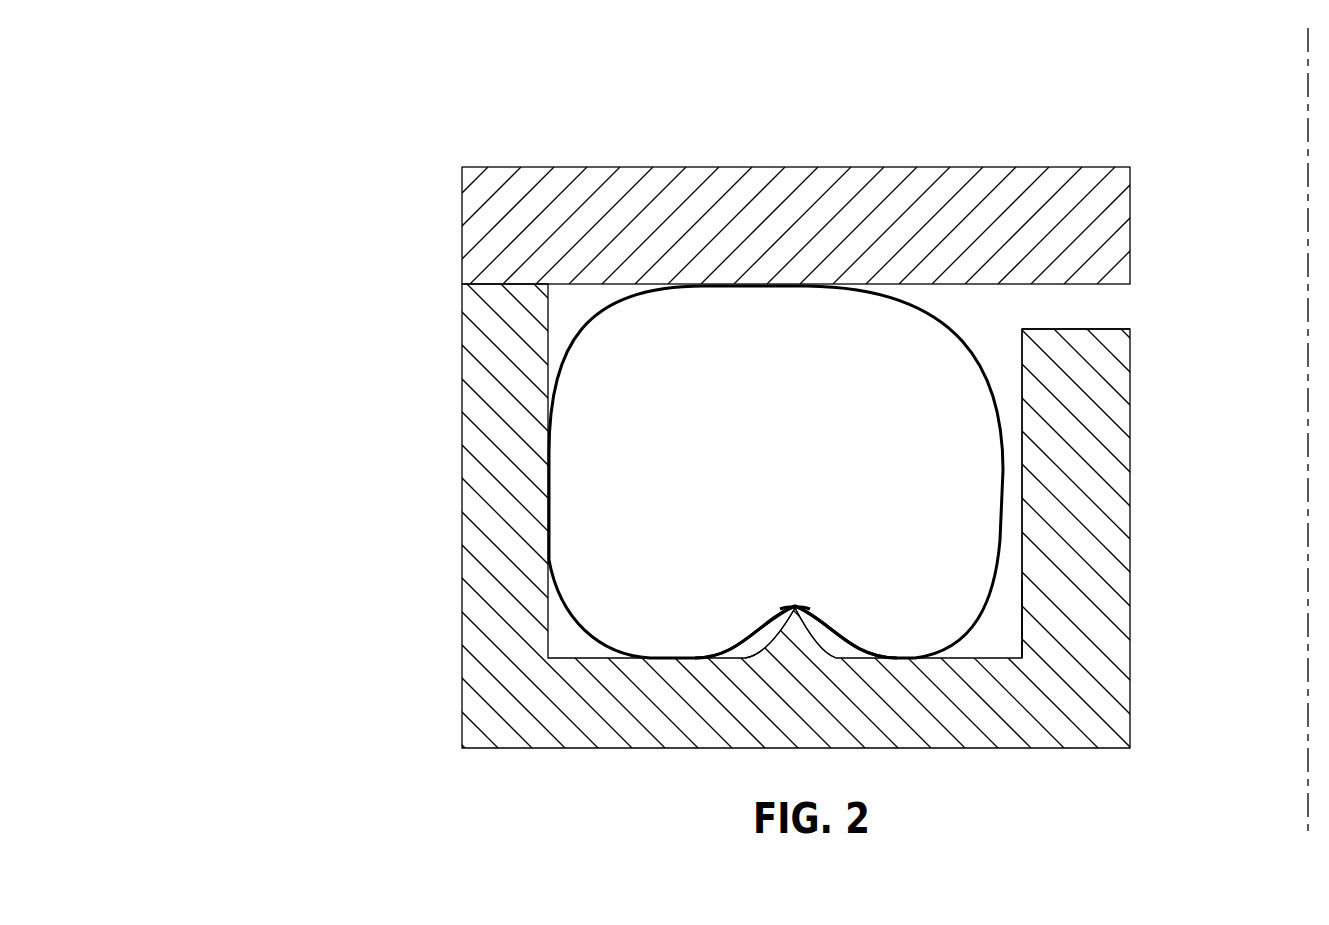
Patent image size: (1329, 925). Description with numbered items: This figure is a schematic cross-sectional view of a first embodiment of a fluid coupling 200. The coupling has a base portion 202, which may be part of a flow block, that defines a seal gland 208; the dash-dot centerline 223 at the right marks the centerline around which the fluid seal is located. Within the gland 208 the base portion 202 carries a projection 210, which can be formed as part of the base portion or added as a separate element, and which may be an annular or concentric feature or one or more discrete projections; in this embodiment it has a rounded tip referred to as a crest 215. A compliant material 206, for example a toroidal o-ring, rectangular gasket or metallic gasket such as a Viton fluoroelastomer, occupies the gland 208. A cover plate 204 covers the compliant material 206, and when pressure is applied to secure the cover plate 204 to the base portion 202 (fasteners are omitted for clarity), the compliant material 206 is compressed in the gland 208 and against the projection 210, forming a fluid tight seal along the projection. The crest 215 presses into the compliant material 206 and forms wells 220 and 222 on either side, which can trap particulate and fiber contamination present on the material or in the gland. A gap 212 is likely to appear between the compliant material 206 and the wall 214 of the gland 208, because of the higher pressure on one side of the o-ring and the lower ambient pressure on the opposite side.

The drop ejection chamber assembly 200 is at (240, 105).
The base portion 202 is at (462, 388).
The cover plate 204 is at (462, 201).
The compliant material 206 is at (799, 481).
The seal gland 208 is at (1012, 324).
The projection 210 is at (793, 626).
The gap 212 is at (1012, 442).
The wall 214 is at (1019, 592).
The crest 215 is at (797, 606).
The well 220 is at (824, 631).
The well 222 is at (757, 634).
The centerline 223 is at (1308, 95).